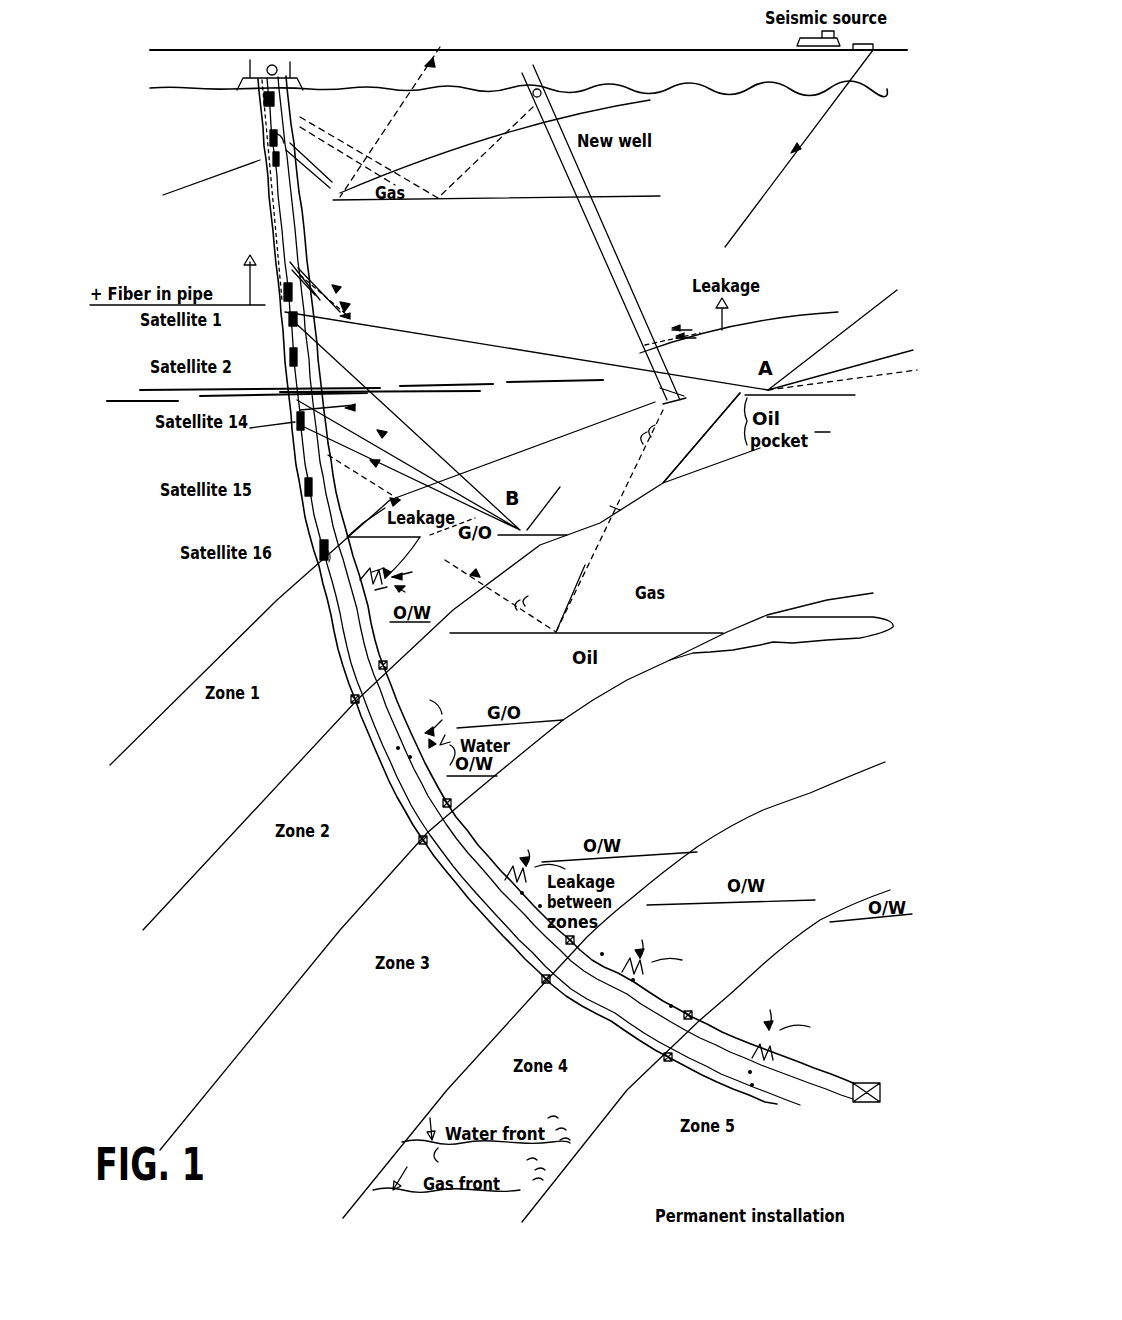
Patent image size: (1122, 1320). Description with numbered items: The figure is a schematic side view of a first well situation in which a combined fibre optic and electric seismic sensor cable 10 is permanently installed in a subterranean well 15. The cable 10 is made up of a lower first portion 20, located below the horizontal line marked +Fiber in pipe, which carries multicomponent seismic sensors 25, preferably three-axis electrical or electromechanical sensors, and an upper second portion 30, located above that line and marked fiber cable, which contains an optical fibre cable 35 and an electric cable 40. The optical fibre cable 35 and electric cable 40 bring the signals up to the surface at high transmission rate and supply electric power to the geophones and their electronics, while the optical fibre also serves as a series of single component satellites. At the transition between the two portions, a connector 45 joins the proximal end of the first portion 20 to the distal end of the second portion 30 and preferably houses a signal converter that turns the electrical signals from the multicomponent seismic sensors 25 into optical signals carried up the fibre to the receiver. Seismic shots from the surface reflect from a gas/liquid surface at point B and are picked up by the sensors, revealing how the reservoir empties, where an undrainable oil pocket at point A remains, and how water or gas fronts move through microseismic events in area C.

The combined fibre optic and electric seismic sensor cable 10 is at (287, 390).
The subterranean well 15 is at (353, 662).
The lower first portion 20 is at (282, 328).
The multicomponent seismic sensors 25 is at (298, 485).
The upper second portion 30 is at (265, 138).
The optical fibre cable 35 is at (264, 158).
The electric cable 40 is at (257, 100).
The connector 45 is at (283, 297).